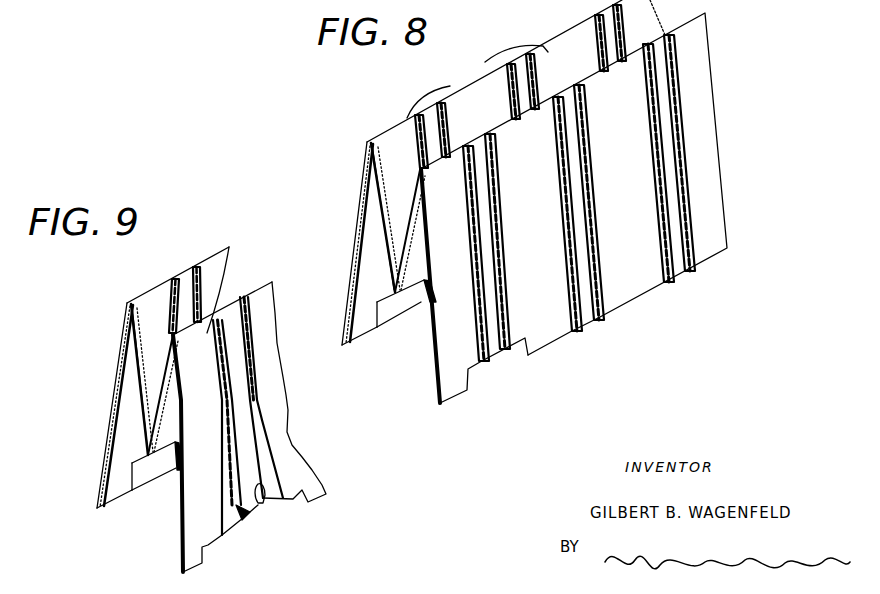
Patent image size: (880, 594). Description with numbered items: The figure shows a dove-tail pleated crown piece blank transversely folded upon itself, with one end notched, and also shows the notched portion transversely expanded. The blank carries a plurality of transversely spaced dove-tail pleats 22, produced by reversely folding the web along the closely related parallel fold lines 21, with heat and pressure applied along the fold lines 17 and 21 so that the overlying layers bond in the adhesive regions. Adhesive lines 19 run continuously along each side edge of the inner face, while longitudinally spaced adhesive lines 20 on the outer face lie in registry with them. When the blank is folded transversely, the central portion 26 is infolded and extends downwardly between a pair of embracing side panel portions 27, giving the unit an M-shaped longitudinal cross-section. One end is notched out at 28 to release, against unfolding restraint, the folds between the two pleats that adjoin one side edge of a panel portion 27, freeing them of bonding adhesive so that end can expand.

In FIG. 9, the fold line 17 is at (297, 442).
In FIG. 8, the line of adhesive 19 is at (362, 256).
In FIG. 9, the line of adhesive 19 is at (117, 415).
In FIG. 8, the line of adhesive 20 is at (380, 173).
In FIG. 9, the line of adhesive 20 is at (137, 322).
In FIG. 9, the fold line 21 is at (262, 505).
In FIG. 8, the dove-tail pleat 22 is at (467, 102).
In FIG. 9, the dove-tail pleat 22 is at (207, 333).
In FIG. 8, the central portion 26 is at (402, 185).
In FIG. 9, the central portion 26 is at (157, 348).
In FIG. 8, the side panel portion 27 is at (383, 301).
In FIG. 9, the side panel portion 27 is at (139, 475).
In FIG. 8, the notch 28 is at (468, 370).
In FIG. 9, the notch 28 is at (210, 547).